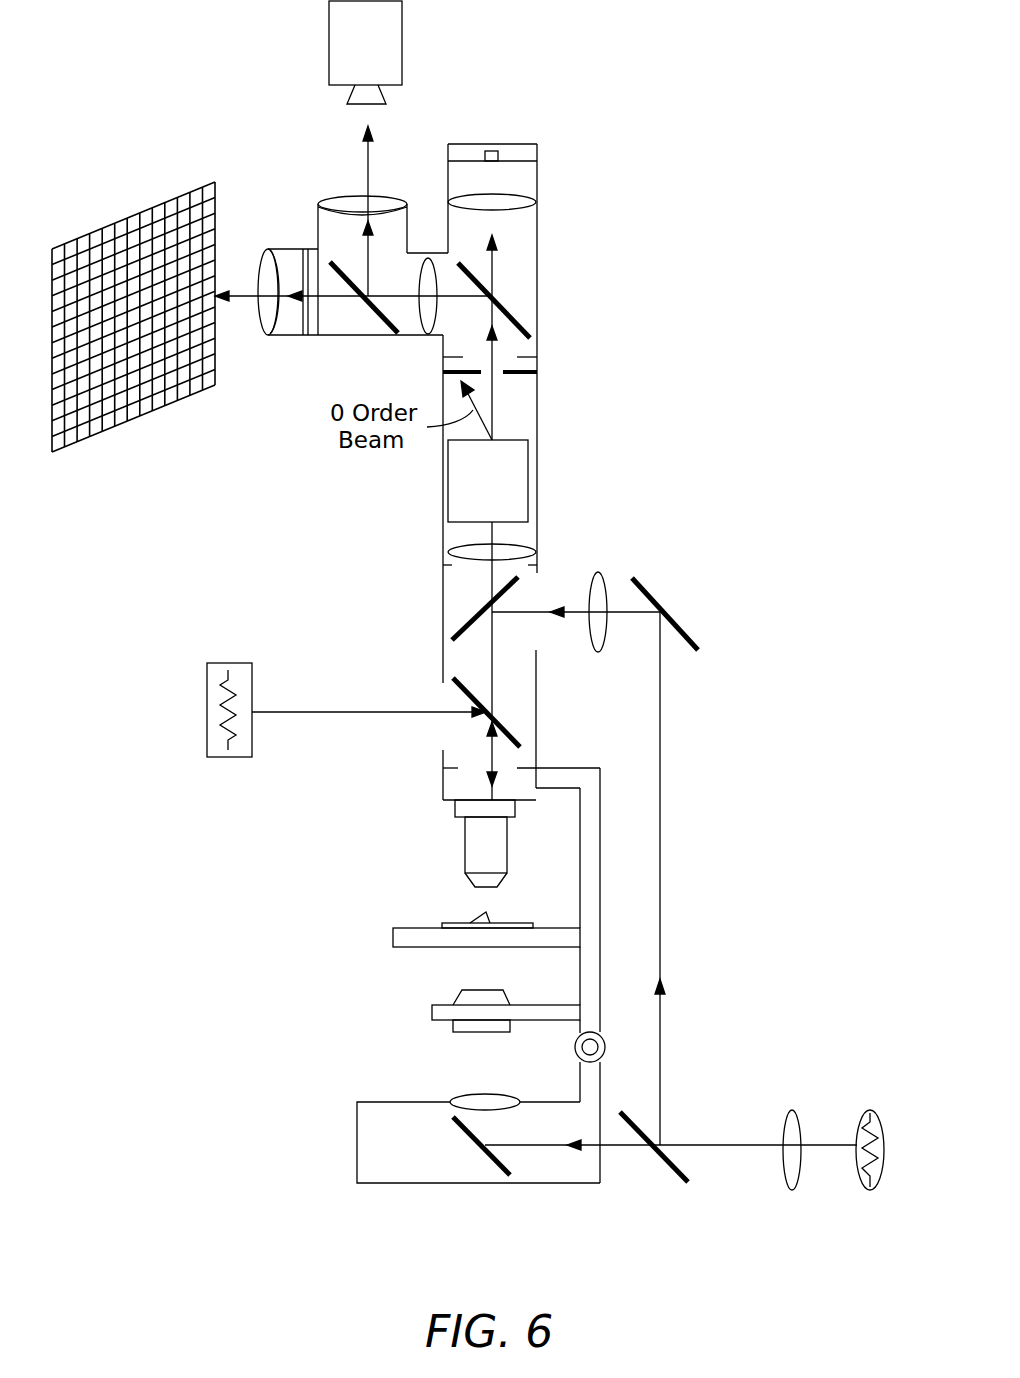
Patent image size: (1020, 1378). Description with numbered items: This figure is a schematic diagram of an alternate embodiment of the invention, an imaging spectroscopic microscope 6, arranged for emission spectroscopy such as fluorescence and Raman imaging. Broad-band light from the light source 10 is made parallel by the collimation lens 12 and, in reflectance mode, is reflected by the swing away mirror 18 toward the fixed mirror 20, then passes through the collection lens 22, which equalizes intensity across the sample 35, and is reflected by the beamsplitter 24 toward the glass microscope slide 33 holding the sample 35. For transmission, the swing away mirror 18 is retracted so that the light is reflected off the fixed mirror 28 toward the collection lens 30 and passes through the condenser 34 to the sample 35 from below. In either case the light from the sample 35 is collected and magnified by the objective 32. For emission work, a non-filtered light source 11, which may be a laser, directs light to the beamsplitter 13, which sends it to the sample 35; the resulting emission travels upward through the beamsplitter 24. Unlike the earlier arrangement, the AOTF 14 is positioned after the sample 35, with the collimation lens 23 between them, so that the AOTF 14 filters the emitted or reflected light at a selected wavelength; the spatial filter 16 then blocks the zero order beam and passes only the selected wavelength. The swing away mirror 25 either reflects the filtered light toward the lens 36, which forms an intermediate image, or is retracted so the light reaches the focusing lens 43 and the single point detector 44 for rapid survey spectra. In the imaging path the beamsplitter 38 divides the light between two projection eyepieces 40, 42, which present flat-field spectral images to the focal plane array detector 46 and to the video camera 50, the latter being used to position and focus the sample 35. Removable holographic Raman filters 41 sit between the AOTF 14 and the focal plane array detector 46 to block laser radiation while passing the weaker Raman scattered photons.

The imaging spectroscopic microscope 6 is at (168, 556).
The light source 10 is at (866, 1112).
The non-filtered light source 11 is at (228, 663).
The collimation lens 12 is at (797, 1115).
The beamsplitter 13 is at (515, 742).
The AOTF 14 is at (523, 462).
The spatial filter 16 is at (520, 380).
The swing away mirror 18 is at (672, 1172).
The fixed mirror 20 is at (680, 625).
The collection lens 22 is at (600, 578).
The collimation lens 23 is at (525, 550).
The beamsplitter 24 is at (468, 628).
The swing away mirror 25 is at (533, 322).
The fixed mirror 28 is at (490, 1165).
The collection lens 30 is at (462, 1097).
The objective 32 is at (465, 848).
The glass microscope slide 33 is at (453, 923).
The condenser 34 is at (458, 995).
The sample 35 is at (490, 923).
The lens 36 is at (430, 257).
The beamsplitter 38 is at (375, 318).
The projection eyepiece 40 is at (276, 248).
The holographic Raman filters 41 is at (305, 247).
The projection eyepiece 42 is at (340, 202).
The focusing lens 43 is at (530, 200).
The single point detector 44 is at (475, 144).
The focal plane array detector 46 is at (122, 220).
The video camera 50 is at (402, 42).